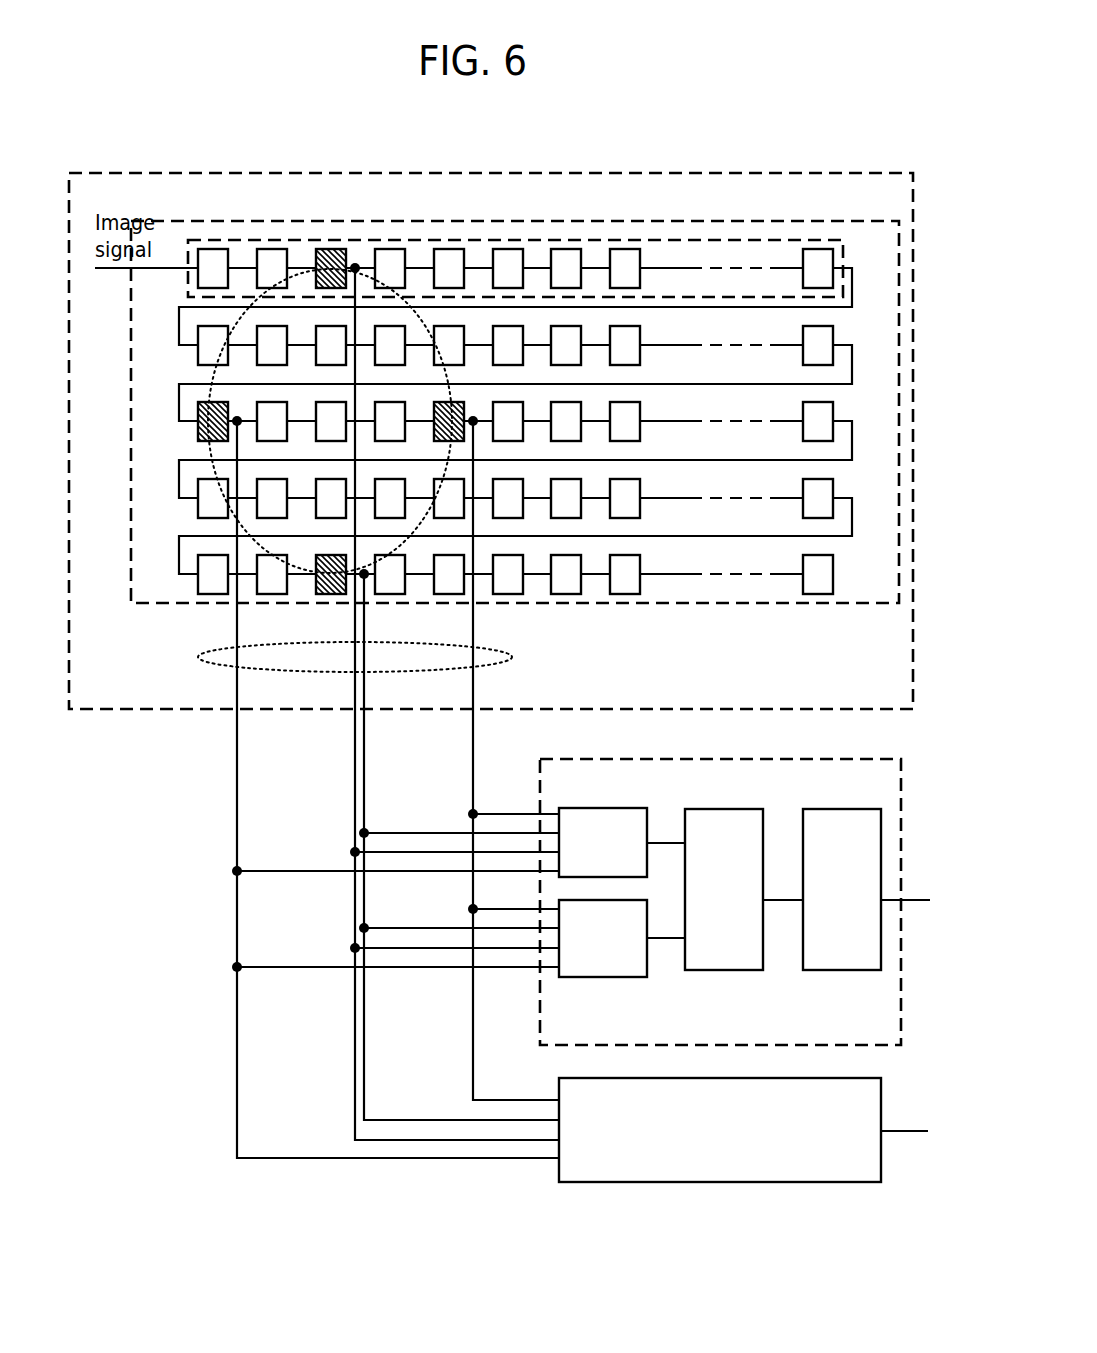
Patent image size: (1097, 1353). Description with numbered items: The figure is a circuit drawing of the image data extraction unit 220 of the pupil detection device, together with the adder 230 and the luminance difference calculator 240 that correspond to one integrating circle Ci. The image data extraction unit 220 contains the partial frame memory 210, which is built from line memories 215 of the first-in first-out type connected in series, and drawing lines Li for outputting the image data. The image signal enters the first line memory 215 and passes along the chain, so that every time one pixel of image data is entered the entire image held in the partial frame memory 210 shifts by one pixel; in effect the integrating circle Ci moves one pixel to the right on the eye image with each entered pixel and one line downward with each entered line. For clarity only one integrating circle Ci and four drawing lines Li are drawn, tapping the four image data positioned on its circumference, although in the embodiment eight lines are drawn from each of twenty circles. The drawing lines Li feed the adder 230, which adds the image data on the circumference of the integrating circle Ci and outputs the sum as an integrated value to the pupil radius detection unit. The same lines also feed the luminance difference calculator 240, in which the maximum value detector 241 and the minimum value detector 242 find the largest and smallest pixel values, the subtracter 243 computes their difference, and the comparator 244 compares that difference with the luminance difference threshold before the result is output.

The image data extraction unit 220 is at (850, 172).
The partial frame memory 210 is at (793, 220).
The line memory 215 is at (737, 240).
The luminance difference calculator 240 is at (767, 757).
The maximum value detector 241 is at (607, 797).
The minimum value detector 242 is at (598, 978).
The subtracter 243 is at (717, 808).
The comparator 244 is at (837, 808).
The adder 230 is at (557, 1093).
The integrating circle Ci is at (207, 451).
The drawing line Li is at (198, 655).